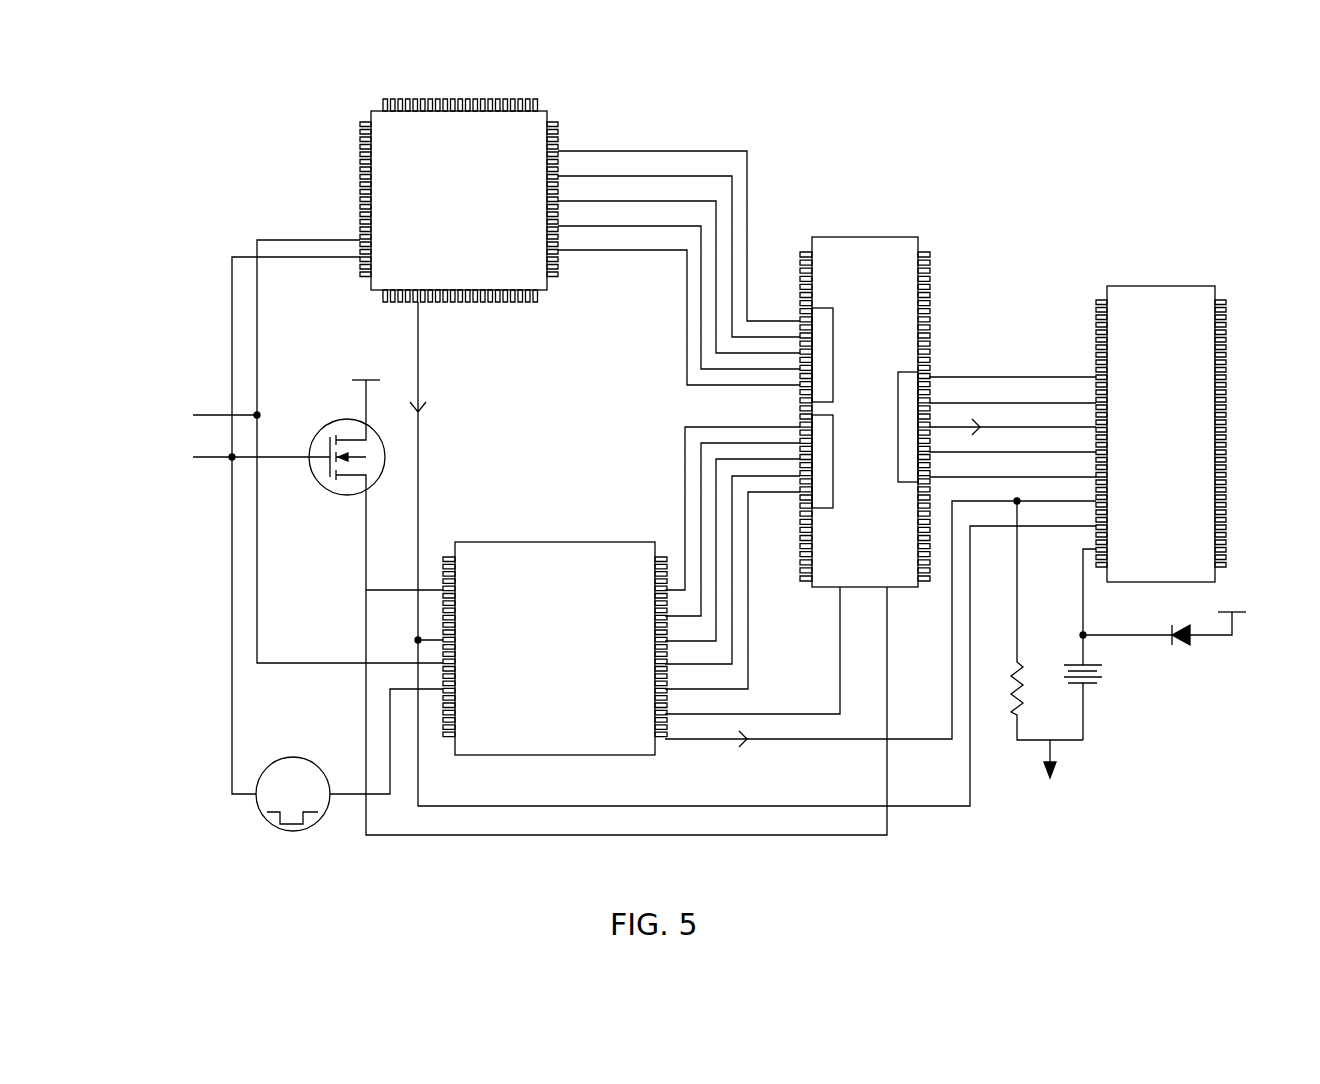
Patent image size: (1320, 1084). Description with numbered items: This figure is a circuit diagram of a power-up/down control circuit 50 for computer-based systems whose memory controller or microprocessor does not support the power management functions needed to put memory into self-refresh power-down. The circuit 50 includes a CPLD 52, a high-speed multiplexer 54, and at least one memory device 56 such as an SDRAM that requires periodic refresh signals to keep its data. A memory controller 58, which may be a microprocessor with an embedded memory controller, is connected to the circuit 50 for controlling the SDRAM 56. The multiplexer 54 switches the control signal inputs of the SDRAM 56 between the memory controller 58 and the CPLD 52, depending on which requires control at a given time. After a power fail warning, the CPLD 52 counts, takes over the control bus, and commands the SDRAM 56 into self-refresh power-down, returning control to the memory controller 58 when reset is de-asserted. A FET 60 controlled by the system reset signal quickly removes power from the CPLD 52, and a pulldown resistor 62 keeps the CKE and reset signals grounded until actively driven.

The power-up/down control circuit 50 is at (1080, 176).
The CPLD 52 is at (484, 562).
The high-speed multiplexer 54 is at (895, 312).
The memory device 56 is at (1190, 346).
The memory controller 58 is at (524, 125).
The FET 60 is at (332, 423).
The pulldown resistor 62 is at (1003, 717).